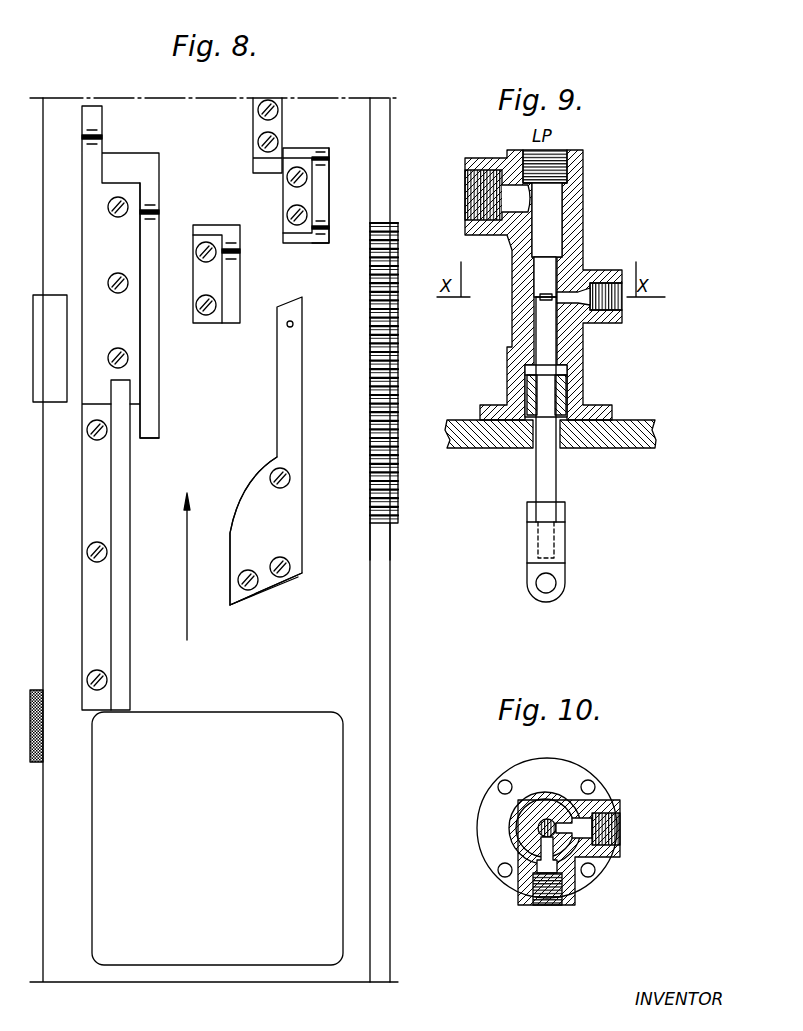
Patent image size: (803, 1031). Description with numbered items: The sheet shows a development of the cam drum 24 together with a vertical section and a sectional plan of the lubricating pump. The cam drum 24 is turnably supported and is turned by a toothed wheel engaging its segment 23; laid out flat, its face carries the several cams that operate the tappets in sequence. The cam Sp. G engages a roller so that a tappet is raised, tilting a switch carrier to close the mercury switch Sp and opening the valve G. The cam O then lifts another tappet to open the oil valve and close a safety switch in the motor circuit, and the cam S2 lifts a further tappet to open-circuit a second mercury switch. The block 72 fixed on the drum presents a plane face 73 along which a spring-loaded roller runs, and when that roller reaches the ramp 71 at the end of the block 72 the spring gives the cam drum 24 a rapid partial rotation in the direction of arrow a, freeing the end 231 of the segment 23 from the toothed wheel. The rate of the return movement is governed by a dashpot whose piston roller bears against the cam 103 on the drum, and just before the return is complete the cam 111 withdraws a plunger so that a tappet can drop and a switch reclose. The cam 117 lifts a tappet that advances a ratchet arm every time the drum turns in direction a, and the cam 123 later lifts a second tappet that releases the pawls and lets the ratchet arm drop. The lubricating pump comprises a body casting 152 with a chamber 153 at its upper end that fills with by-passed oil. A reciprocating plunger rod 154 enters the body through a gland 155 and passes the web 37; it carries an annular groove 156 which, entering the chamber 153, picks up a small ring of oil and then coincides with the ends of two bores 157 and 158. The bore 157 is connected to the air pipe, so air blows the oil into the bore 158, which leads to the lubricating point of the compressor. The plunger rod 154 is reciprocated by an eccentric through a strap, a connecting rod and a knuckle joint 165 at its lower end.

In FIG. 8, the cam drum 24 is at (217, 828).
In FIG. 8, the cam 117 is at (90, 186).
In FIG. 8, the cam O is at (147, 230).
In FIG. 8, the cam 103 is at (118, 476).
In FIG. 8, the cam 123 is at (55, 318).
In FIG. 8, the cam 111 is at (277, 136).
In FIG. 8, the mercury switch Sp is at (326, 154).
In FIG. 8, the valve G is at (331, 181).
In FIG. 8, the cam S2 is at (229, 274).
In FIG. 8, the plane face 73 is at (303, 398).
In FIG. 8, the block 72 is at (275, 510).
In FIG. 8, the ramp 71 is at (272, 590).
In FIG. 8, the segment 23 is at (370, 322).
In FIG. 8, the end of segment 231 is at (385, 525).
In FIG. 8, the arrow a is at (187, 600).
In FIG. 9, the body casting 152 is at (575, 213).
In FIG. 10, the body casting 152 is at (532, 815).
In FIG. 9, the chamber 153 is at (547, 206).
In FIG. 9, the reciprocating plunger rod 154 is at (541, 296).
In FIG. 9, the annular groove 156 is at (536, 302).
In FIG. 9, the bore 157 is at (603, 313).
In FIG. 10, the bore 157 is at (585, 806).
In FIG. 9, the gland 155 is at (566, 370).
In FIG. 9, the web 37 is at (608, 446).
In FIG. 9, the knuckle joint 165 is at (557, 582).
In FIG. 10, the bore 158 is at (518, 880).